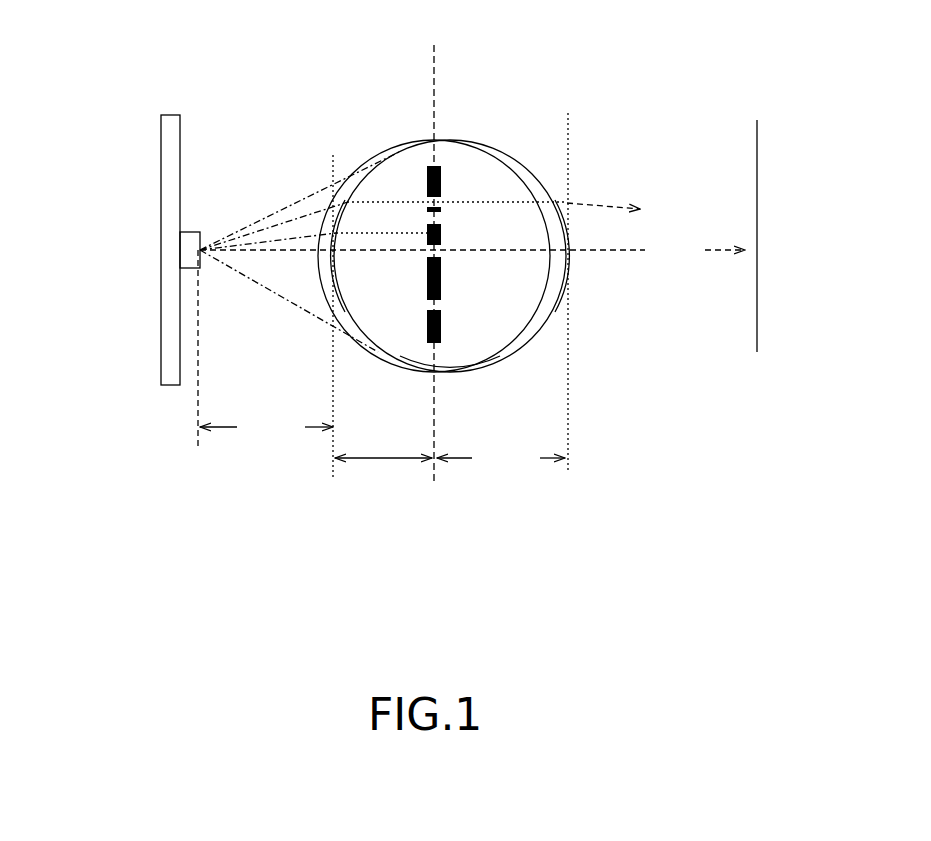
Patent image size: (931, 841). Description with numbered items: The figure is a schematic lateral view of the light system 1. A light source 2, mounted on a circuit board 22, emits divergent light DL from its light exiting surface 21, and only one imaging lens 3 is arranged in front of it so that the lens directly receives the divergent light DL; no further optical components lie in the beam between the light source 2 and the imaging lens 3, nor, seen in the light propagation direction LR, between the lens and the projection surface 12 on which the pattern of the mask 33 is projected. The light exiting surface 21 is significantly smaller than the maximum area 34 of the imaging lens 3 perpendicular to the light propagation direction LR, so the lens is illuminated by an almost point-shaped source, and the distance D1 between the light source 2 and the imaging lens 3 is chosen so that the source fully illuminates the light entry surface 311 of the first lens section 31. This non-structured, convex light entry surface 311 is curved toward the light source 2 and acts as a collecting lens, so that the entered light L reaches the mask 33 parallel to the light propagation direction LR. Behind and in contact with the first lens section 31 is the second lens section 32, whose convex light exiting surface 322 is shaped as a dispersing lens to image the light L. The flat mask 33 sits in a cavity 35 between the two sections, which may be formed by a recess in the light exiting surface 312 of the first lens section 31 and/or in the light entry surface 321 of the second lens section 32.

The light system 1 is at (298, 95).
The light source 2 is at (188, 228).
The imaging lens 3 is at (570, 505).
The projection surface 12 is at (757, 115).
The light exiting surface 21 is at (193, 405).
The circuit board 22 is at (153, 320).
The first lens section 31 is at (387, 304).
The second lens section 32 is at (518, 304).
The mask 33 is at (420, 178).
The maximum area of the imaging lens 34 is at (430, 78).
The cavity 35 is at (434, 254).
The light entry surface of the first lens section 311 is at (330, 277).
The light exiting surface of the first lens section 312 is at (437, 353).
The light entry surface of the second lens section 321 is at (450, 361).
The light exiting surface of the second lens section 322 is at (555, 321).
The light entered the imaging lens L is at (487, 192).
The light propagation direction LR is at (472, 251).
The divergent light DL is at (298, 222).
The distance light source to imaging lens D1 is at (266, 428).